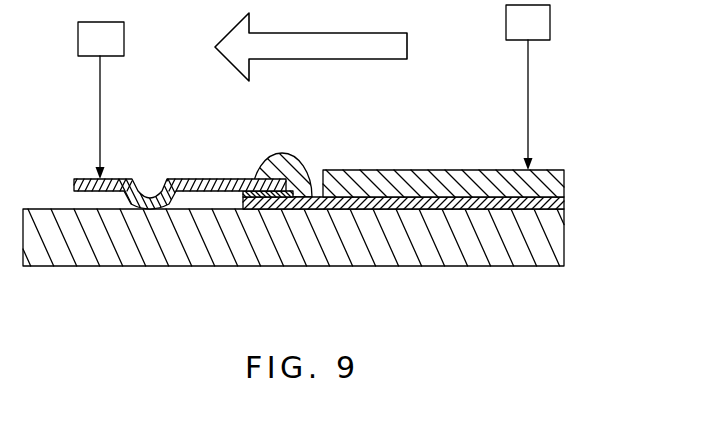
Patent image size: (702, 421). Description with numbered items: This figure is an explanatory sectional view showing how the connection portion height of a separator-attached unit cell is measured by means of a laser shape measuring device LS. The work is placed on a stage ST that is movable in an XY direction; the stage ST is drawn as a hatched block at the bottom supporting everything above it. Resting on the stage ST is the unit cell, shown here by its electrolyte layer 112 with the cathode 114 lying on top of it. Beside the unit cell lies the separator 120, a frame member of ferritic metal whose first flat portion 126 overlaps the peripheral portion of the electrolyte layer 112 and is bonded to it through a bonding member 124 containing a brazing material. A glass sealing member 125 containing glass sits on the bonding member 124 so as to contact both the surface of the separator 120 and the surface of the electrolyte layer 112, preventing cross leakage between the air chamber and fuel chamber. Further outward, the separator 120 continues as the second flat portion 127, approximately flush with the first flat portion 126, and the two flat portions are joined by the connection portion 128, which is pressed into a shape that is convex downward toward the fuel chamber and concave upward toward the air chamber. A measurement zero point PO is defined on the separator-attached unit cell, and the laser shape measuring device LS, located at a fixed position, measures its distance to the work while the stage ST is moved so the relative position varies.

The electrolyte layer 112 is at (565, 200).
The cathode 114 is at (559, 185).
The separator 120 is at (180, 144).
The bonding member 124 is at (244, 198).
The glass sealing member 125 is at (283, 154).
The first flat portion 126 is at (226, 154).
The second flat portion 127 is at (125, 178).
The connection portion 128 is at (150, 194).
The stage ST is at (338, 259).
The measurement zero point PO is at (524, 168).
The laser shape measuring device LS is at (314, 92).